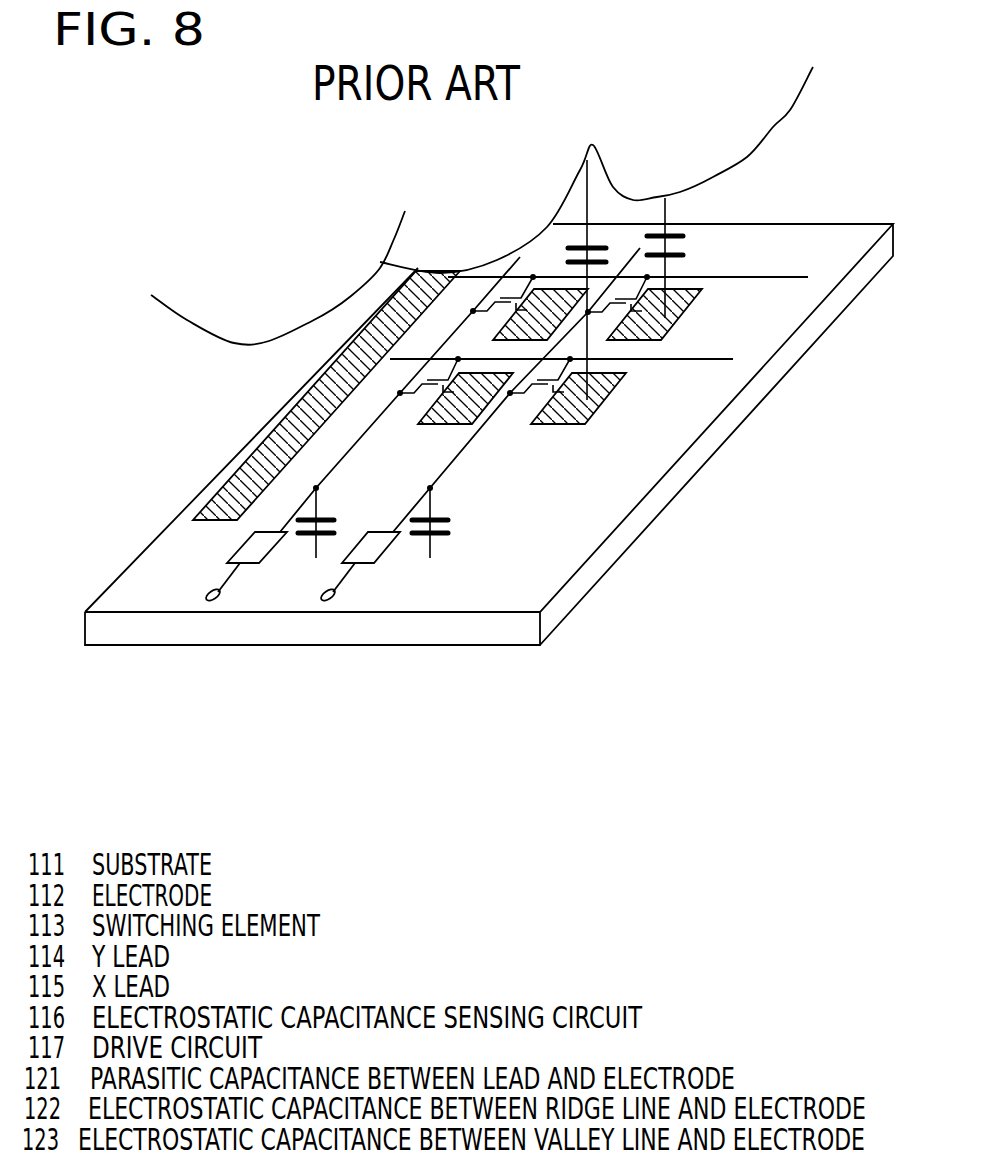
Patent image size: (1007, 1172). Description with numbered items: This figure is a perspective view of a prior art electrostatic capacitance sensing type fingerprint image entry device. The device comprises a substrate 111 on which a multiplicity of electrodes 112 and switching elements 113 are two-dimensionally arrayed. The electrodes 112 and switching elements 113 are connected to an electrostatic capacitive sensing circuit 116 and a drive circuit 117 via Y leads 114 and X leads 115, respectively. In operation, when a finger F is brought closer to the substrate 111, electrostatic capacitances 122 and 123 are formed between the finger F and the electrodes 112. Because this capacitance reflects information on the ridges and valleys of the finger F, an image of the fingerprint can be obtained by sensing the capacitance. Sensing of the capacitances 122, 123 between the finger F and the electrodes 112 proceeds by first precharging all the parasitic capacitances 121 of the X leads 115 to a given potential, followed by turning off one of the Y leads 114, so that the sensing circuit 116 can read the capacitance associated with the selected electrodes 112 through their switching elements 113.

The substrate 111 is at (150, 574).
The electrode 112 is at (580, 410).
The switching element 113 is at (531, 395).
The Y lead 114 is at (736, 278).
The X lead 115 is at (453, 462).
The electrostatic capacitive sensing circuit 116 is at (367, 549).
The drive circuit 117 is at (241, 486).
The parasitic capacitance 121 is at (449, 531).
The electrostatic capacitance 122 is at (640, 228).
The electrostatic capacitance 123 is at (558, 250).
The finger F is at (199, 313).